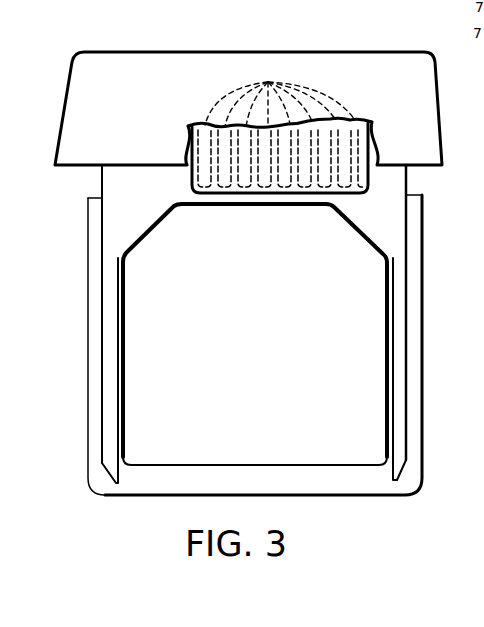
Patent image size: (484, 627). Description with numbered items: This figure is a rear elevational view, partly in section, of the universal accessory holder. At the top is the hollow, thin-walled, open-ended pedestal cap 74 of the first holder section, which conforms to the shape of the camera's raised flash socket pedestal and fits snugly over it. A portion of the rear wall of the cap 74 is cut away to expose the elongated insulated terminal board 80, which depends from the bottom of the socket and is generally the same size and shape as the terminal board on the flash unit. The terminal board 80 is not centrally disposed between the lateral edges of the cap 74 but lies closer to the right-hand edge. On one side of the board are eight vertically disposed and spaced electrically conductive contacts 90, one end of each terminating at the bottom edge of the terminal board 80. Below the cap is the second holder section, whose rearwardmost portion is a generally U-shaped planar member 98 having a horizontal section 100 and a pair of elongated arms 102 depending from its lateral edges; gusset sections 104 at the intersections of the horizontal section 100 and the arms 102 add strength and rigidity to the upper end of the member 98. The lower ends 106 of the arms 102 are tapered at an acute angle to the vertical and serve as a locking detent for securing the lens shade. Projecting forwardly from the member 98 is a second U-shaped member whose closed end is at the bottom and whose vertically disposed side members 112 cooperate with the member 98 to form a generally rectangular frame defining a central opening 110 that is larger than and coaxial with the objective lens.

The pedestal cap 74 is at (428, 60).
The electrically conductive contacts 90 is at (280, 93).
The terminal board 80 is at (193, 184).
The U-shaped planar member 98 is at (101, 185).
The horizontal section 100 is at (254, 218).
The elongated arms 102 is at (110, 340).
The gusset sections 104 is at (150, 230).
The lower ends 106 is at (103, 476).
The central opening 110 is at (343, 404).
The side members 112 is at (88, 272).